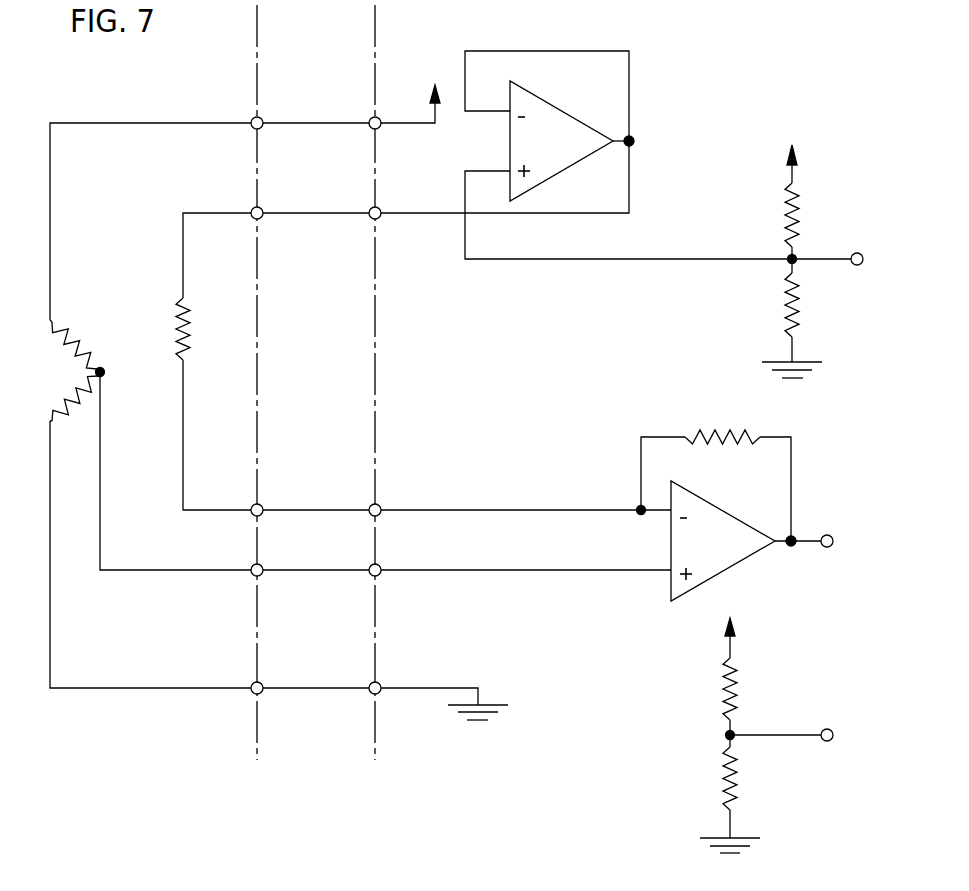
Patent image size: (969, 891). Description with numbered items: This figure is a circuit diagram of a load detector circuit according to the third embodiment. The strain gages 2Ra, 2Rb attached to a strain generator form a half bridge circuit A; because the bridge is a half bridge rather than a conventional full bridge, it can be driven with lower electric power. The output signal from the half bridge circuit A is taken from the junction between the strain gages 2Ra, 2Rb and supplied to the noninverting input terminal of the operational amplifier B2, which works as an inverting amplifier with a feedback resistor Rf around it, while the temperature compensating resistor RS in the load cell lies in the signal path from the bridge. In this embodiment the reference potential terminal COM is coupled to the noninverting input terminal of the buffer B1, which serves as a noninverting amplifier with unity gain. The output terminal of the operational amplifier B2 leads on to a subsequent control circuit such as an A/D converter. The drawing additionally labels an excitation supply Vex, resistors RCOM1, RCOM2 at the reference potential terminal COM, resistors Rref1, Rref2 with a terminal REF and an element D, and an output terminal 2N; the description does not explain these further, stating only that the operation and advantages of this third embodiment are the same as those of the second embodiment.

The half bridge circuit A is at (72, 361).
The buffer B1 is at (577, 51).
The operational amplifier B2 is at (698, 588).
The reference voltage divider D is at (767, 768).
The strain gages 2Rb is at (83, 344).
The strain gages 2Ra is at (74, 408).
The temperature compensating resistor RS is at (199, 329).
The feedback resistor Rf is at (714, 474).
The common divider resistor RCOM1 is at (769, 325).
The common divider resistor RCOM2 is at (756, 228).
The reference divider resistor Rref1 is at (718, 800).
The reference divider resistor Rref2 is at (704, 702).
The reference potential terminal COM is at (832, 247).
The reference output terminal REF is at (786, 721).
The output terminal 2N is at (842, 541).
The excitation voltage supply Vex is at (612, 359).